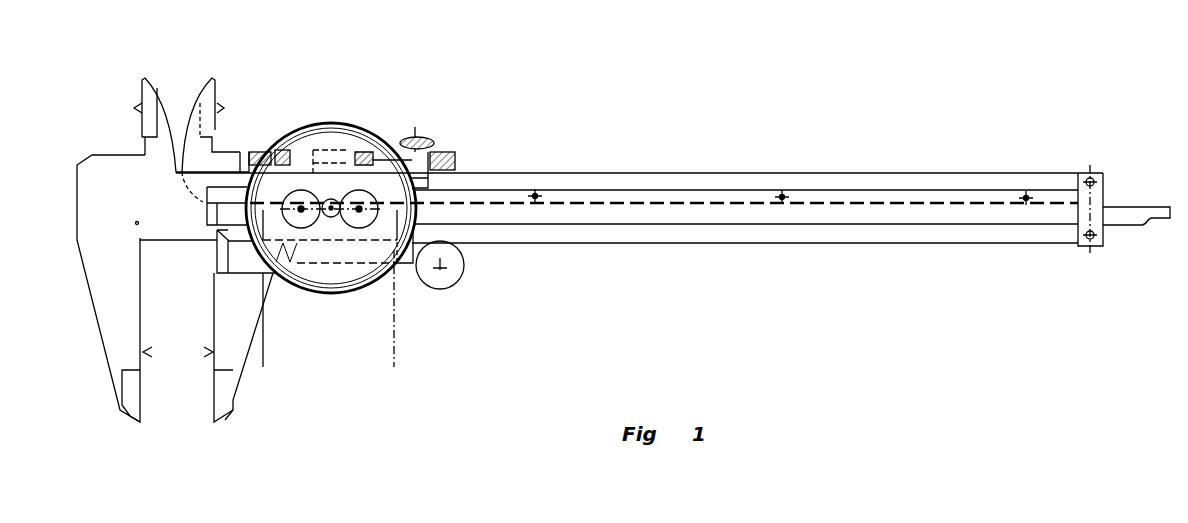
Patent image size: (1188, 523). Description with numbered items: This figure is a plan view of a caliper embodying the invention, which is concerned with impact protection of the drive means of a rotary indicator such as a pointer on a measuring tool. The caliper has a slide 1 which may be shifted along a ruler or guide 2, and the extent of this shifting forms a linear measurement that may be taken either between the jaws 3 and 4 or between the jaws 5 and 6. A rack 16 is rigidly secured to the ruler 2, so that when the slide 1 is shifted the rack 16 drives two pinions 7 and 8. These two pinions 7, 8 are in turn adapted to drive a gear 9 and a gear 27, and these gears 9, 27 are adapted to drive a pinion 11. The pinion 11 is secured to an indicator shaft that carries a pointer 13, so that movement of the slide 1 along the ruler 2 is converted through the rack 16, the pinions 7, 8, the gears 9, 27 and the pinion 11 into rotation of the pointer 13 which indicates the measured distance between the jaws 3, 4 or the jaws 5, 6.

The slide 1 is at (453, 153).
The ruler 2 is at (515, 175).
The jaw 3 is at (153, 358).
The jaw 4 is at (200, 358).
The jaw 5 is at (136, 105).
The jaw 6 is at (224, 105).
The pinion 7 is at (363, 200).
The pinion 8 is at (275, 150).
The gear 9 is at (301, 207).
The pinion 11 is at (332, 207).
The pointer 13 is at (358, 207).
The rack 16 is at (828, 203).
The gear 27 is at (419, 138).